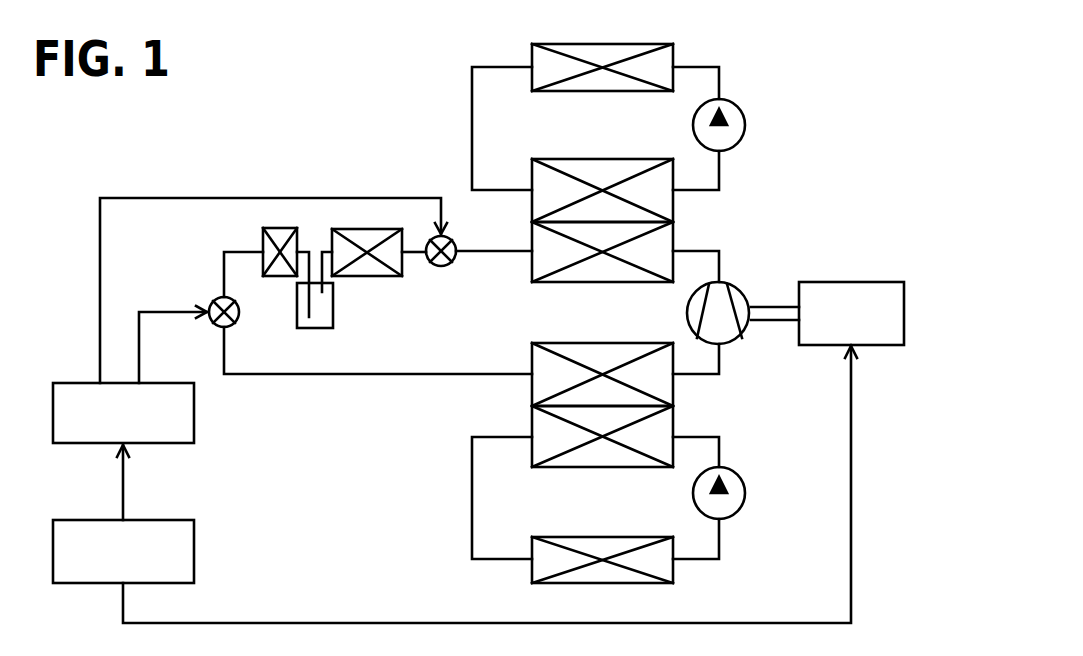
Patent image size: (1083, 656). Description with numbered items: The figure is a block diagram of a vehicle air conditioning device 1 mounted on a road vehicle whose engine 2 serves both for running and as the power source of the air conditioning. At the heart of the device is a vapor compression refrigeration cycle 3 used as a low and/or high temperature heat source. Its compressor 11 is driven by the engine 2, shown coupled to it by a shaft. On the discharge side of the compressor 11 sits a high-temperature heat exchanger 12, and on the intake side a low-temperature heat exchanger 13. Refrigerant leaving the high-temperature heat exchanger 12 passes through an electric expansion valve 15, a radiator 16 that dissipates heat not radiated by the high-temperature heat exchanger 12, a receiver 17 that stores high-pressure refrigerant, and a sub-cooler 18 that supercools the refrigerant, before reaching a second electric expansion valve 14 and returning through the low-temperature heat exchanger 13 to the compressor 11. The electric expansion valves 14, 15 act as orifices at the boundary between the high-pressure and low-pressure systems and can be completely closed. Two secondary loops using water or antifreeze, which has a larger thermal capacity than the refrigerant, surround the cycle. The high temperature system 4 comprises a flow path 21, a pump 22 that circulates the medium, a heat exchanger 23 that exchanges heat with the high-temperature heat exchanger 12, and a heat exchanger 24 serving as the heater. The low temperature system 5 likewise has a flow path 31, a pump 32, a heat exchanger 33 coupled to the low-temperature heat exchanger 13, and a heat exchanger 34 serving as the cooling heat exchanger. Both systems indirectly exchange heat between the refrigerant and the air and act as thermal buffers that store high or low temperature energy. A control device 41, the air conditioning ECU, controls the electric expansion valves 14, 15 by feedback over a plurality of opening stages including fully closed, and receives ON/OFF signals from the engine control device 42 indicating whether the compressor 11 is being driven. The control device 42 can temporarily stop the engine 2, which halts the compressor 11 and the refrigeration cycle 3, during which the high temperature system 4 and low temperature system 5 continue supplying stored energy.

The vehicle air conditioning device 1 is at (867, 173).
The engine 2 is at (838, 282).
The refrigeration cycle 3 is at (328, 160).
The high temperature system 4 is at (735, 62).
The low temperature system 5 is at (738, 436).
The compressor 11 is at (740, 289).
The high-temperature heat exchanger 12 is at (572, 282).
The low-temperature heat exchanger 13 is at (612, 343).
The electric expansion valve 14 is at (235, 325).
The electric expansion valve 15 is at (441, 266).
The radiator 16 is at (380, 276).
The receiver 17 is at (333, 318).
The sub-cooler 18 is at (270, 276).
The flow path 21 is at (470, 102).
The pump 22 is at (745, 125).
The heat exchanger 23 is at (618, 159).
The heat exchanger 24 is at (572, 91).
The flow path 31 is at (470, 487).
The pump 32 is at (745, 493).
The heat exchanger 33 is at (573, 467).
The heat exchanger 34 is at (612, 537).
The control device 41 is at (194, 417).
The control device 42 is at (194, 520).